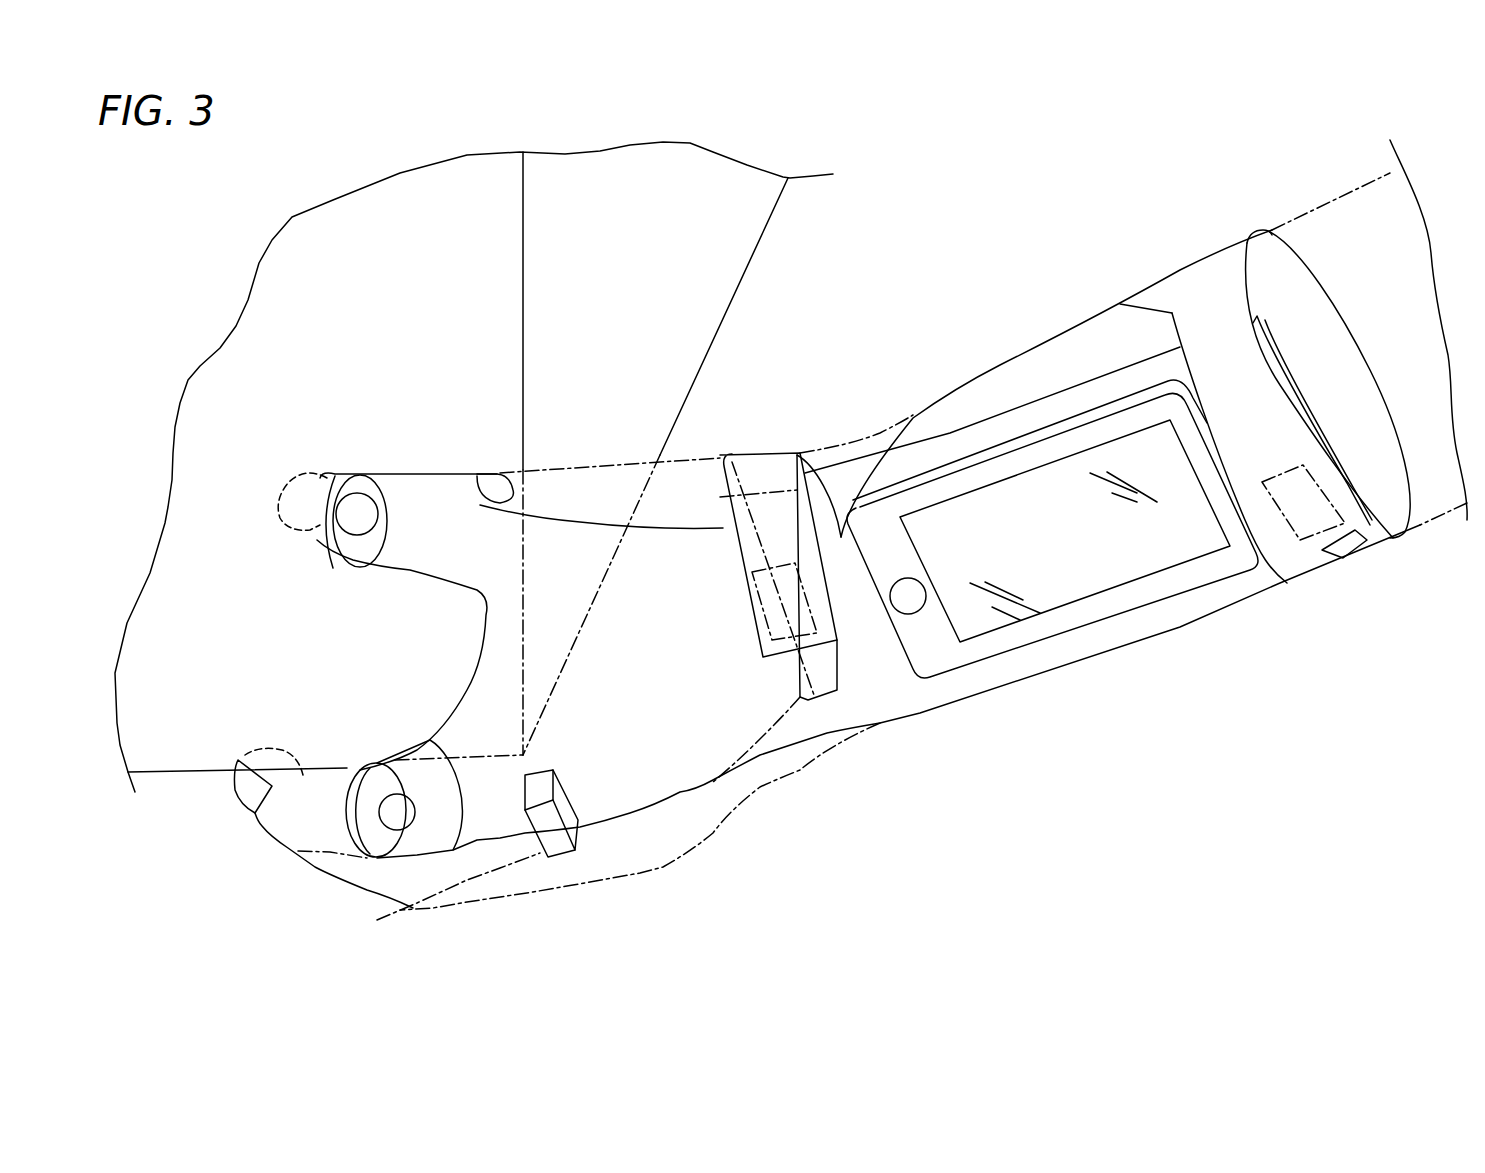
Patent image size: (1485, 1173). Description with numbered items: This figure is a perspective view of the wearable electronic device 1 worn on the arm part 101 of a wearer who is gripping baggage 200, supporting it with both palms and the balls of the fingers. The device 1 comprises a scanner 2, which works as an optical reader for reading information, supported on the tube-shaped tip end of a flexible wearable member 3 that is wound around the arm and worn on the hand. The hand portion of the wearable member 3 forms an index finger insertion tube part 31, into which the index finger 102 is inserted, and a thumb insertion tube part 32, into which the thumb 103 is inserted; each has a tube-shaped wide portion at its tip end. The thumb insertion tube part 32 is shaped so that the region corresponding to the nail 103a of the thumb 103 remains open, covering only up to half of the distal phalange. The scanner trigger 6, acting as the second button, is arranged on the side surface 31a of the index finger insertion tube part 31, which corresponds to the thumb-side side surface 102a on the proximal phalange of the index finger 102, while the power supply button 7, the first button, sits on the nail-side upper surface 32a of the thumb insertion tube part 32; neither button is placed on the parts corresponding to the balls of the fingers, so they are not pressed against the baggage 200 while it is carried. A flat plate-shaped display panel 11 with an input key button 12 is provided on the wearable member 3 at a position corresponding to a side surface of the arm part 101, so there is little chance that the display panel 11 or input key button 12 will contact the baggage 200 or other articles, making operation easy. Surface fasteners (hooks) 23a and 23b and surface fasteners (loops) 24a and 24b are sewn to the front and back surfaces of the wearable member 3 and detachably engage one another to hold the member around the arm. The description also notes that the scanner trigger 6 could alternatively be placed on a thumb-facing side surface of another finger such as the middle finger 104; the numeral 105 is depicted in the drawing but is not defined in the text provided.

The wearable electronic device 1 is at (1092, 364).
The scanner 2 is at (555, 837).
The wearable member 3 is at (1060, 667).
The scanner trigger 6 is at (380, 813).
The power supply button 7 is at (363, 527).
The display panel 11 is at (1148, 598).
The input key button 12 is at (905, 597).
The surface fastener (hook) 23a is at (780, 620).
The surface fastener (hook) 23b is at (1312, 515).
The surface fastener (loop) 24a is at (792, 697).
The surface fastener (loop) 24b is at (1342, 543).
The index finger insertion tube part 31 is at (380, 843).
The side surface of the index finger insertion tube part 31a is at (413, 757).
The thumb insertion tube part 32 is at (432, 472).
The nail-side upper surface of the thumb insertion tube part 32a is at (326, 557).
The arm part 101 is at (1317, 200).
The index finger 102 is at (250, 853).
The side surface 102a is at (303, 760).
The thumb 103 is at (317, 540).
The nail 103a is at (303, 493).
The middle finger 104 is at (453, 912).
The back of hand 105 is at (577, 895).
The baggage 200 is at (731, 303).